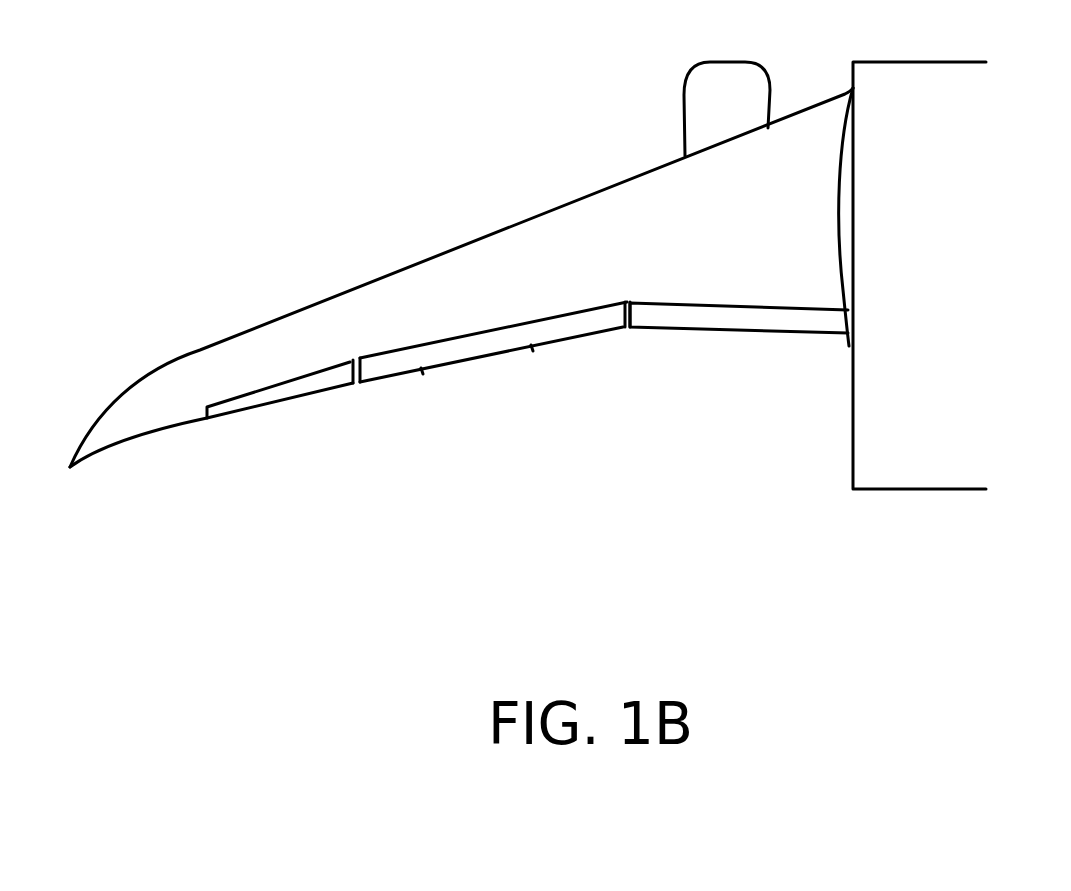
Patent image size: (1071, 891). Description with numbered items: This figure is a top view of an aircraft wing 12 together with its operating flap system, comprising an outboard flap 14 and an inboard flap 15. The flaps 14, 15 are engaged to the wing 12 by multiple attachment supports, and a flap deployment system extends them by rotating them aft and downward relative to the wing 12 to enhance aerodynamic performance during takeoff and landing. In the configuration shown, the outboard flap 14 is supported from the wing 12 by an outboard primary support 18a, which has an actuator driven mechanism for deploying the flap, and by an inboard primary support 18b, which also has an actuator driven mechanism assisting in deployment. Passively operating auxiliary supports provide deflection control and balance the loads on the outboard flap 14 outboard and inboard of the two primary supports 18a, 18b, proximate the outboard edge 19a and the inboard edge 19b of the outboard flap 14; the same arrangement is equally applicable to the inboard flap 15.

The wing 12 is at (448, 285).
The outboard flap 14 is at (490, 356).
The inboard flap 15 is at (795, 327).
The outboard primary support 18a is at (423, 370).
The inboard primary support 18b is at (533, 347).
The outboard edge 19a is at (353, 360).
The inboard edge 19b is at (627, 300).